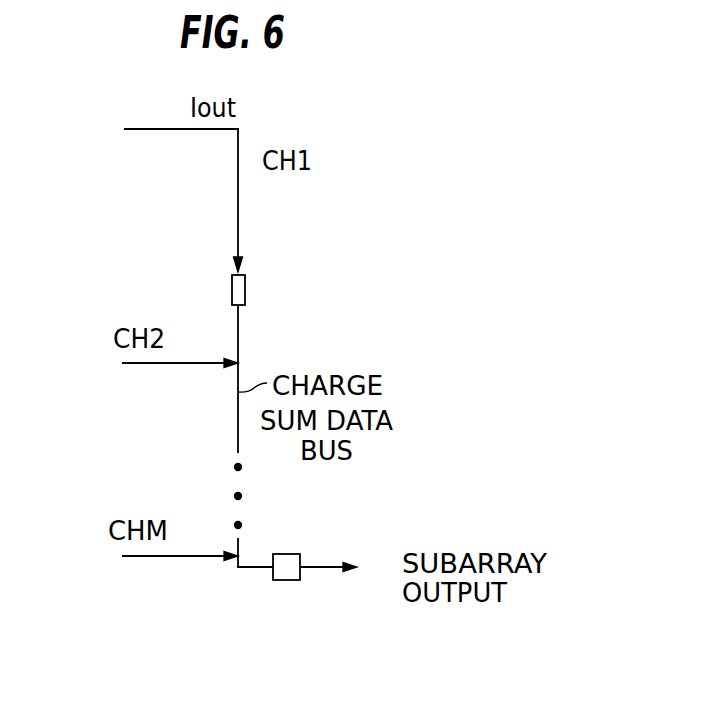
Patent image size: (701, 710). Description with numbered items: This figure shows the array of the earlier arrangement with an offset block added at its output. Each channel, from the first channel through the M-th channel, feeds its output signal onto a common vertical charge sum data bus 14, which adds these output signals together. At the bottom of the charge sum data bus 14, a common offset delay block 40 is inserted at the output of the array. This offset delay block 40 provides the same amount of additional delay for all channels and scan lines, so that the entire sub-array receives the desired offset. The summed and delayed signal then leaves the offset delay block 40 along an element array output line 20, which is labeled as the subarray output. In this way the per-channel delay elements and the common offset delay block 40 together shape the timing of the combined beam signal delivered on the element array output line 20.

The charge sum data bus 14 is at (238, 333).
The common offset delay block 40 is at (285, 554).
The element array output line 20 is at (346, 563).